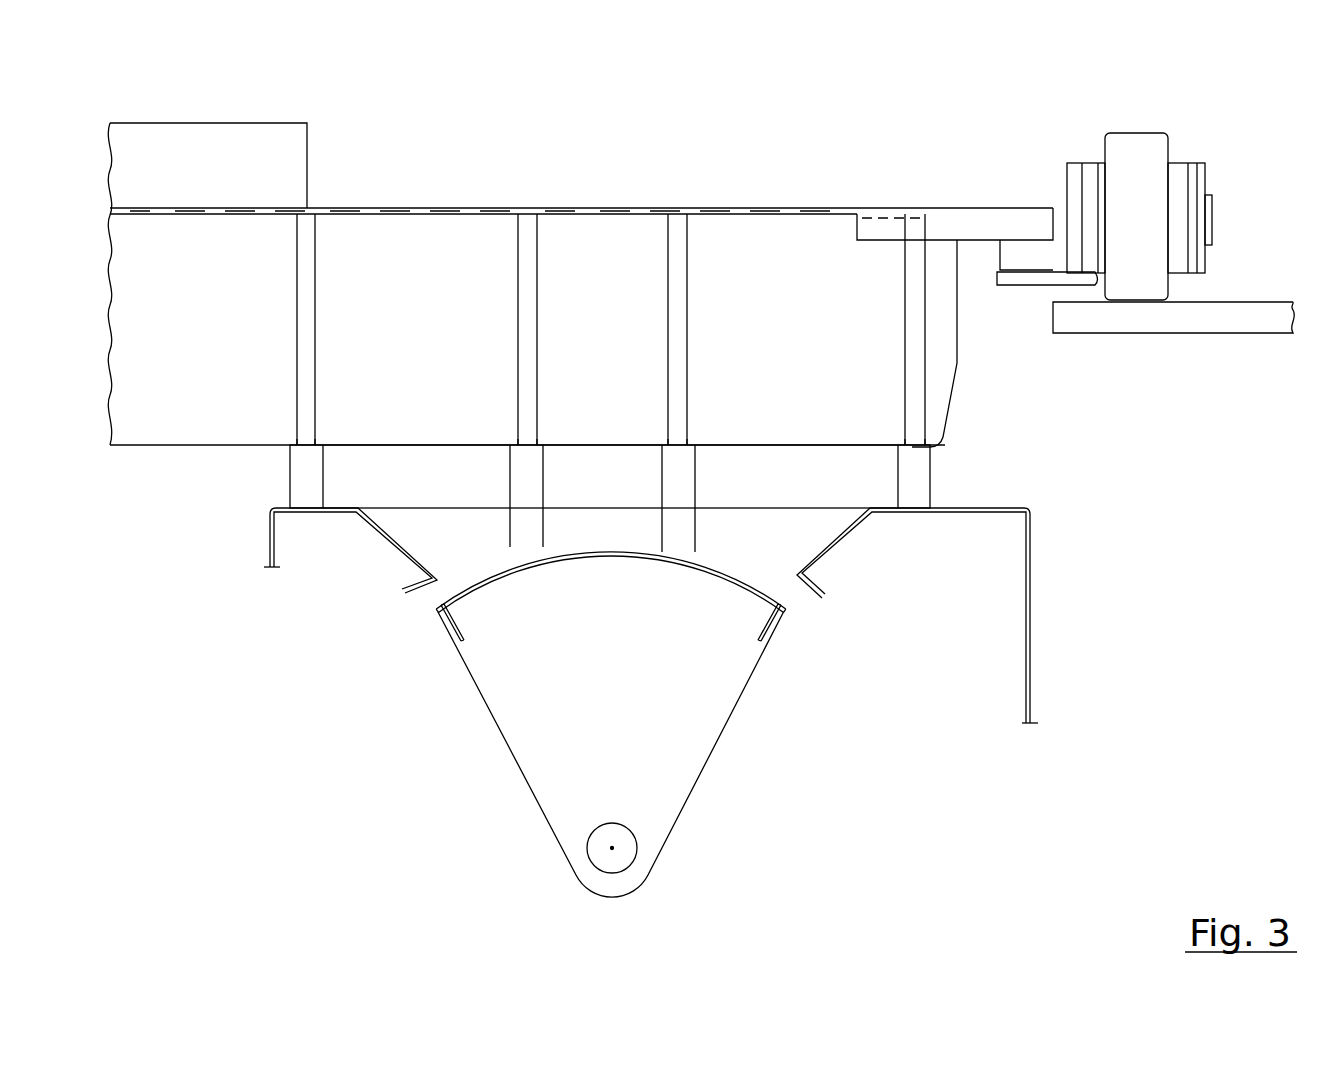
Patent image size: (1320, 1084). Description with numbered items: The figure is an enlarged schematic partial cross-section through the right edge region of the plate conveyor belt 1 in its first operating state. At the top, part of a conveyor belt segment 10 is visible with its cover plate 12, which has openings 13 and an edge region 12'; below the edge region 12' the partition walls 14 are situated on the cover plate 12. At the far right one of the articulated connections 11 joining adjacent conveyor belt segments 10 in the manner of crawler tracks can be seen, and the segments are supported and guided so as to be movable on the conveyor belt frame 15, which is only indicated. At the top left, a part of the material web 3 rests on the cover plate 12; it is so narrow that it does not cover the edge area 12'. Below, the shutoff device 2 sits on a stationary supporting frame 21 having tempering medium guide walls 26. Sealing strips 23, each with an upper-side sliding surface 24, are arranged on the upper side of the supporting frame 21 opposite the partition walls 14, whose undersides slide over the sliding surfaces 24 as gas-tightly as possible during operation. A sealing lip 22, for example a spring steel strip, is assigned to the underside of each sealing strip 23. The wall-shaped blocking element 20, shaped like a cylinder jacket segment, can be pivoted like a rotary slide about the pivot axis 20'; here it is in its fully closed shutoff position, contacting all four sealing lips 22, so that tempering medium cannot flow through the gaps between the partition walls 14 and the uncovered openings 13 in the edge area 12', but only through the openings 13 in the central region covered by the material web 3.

The plate conveyor belt 1 is at (435, 147).
The shutoff device 2 is at (410, 660).
The material web 3 is at (152, 118).
The conveyor belt segment 10 is at (1017, 363).
The articulated connection 11 is at (1215, 152).
The cover plate 12 is at (581, 142).
The edge region of cover plate 12' is at (821, 175).
The openings 13 is at (165, 214).
The partition walls 14 is at (310, 345).
The conveyor belt frame 15 is at (1250, 312).
The blocking element 20 is at (611, 645).
The pivot axis 20' is at (675, 845).
The supporting frame 21 is at (1045, 516).
The sealing lip 22 is at (657, 550).
The sealing strip 23 is at (520, 478).
The sliding surface 24 is at (300, 440).
The tempering medium guide walls 26 is at (268, 535).